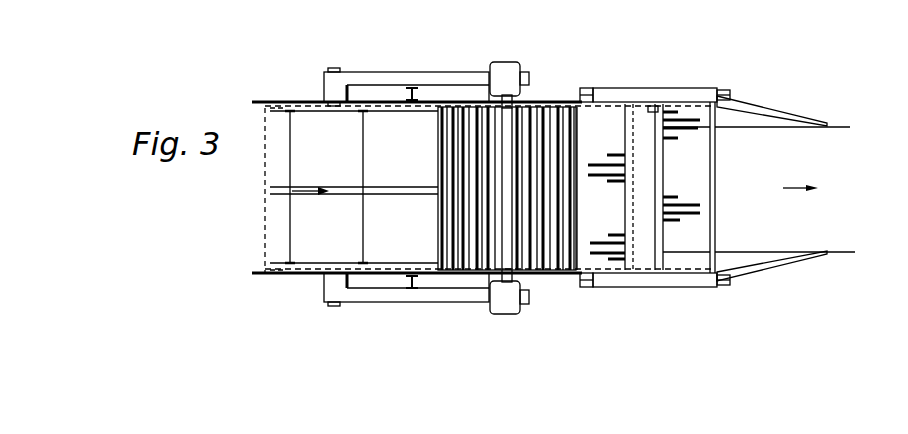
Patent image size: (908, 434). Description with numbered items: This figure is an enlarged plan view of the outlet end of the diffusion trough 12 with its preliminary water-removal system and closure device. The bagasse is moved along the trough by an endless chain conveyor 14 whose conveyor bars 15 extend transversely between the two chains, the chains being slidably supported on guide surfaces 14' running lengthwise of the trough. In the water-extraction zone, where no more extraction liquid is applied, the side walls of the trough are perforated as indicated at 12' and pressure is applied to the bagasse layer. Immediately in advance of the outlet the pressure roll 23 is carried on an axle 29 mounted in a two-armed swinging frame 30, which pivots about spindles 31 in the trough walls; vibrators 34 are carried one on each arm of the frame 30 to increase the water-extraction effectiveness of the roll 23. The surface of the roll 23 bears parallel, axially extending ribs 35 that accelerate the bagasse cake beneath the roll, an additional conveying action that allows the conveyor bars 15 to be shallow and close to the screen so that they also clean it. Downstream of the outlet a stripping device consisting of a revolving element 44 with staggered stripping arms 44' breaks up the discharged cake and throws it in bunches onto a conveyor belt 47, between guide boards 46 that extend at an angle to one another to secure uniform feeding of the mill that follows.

The diffusion trough 12 is at (416, 207).
The perforated side walls 12' is at (490, 223).
The endless chain conveyor 14 is at (325, 190).
The guide surfaces 14' is at (354, 251).
The conveyor bars 15 is at (258, 199).
The pressure roll 23 is at (463, 258).
The axle 29 is at (515, 100).
The two-armed swinging frame 30 is at (367, 78).
The spindles 31 is at (336, 108).
The vibrators 34 is at (506, 62).
The ribs 35 is at (558, 268).
The revolving element 44 is at (614, 159).
The stripping arms 44' is at (693, 159).
The guide boards 46 is at (767, 112).
The conveyor belt 47 is at (836, 232).